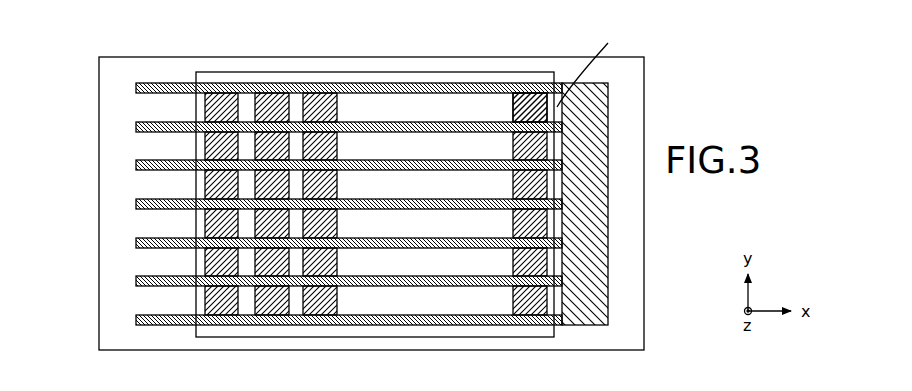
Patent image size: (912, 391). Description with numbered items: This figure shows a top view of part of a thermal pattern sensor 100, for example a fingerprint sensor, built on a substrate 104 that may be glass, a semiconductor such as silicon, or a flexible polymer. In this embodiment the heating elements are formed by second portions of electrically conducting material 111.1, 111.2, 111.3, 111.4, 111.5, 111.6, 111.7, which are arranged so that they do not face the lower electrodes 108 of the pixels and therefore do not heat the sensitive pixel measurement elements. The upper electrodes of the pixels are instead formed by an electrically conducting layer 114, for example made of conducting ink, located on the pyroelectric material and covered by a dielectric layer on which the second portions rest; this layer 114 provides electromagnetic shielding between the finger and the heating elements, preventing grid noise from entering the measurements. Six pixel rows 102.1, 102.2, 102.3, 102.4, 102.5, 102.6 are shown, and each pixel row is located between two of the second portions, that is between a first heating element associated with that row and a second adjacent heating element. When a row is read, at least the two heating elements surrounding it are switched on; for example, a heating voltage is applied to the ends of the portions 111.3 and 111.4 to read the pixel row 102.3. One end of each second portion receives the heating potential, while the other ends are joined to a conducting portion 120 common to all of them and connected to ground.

The thermal pattern sensor 100 is at (648, 43).
The first pixel row 102.1 is at (186, 112).
The second pixel row 102.2 is at (186, 147).
The third pixel row 102.3 is at (186, 184).
The fourth pixel row 102.4 is at (186, 223).
The fifth pixel row 102.5 is at (186, 262).
The sixth pixel row 102.6 is at (186, 300).
The substrate 104 is at (637, 323).
The lower electrode 108 is at (528, 103).
The second portion of conducting material 111.1 is at (181, 87).
The second portion of conducting material 111.2 is at (352, 122).
The second portion of conducting material 111.3 is at (402, 165).
The second portion of conducting material 111.4 is at (465, 200).
The second portion of conducting material 111.5 is at (403, 247).
The second portion of conducting material 111.6 is at (351, 284).
The second portion of conducting material 111.7 is at (181, 326).
The electrically conducting layer 114 is at (265, 72).
The conducting portion 120 is at (603, 110).